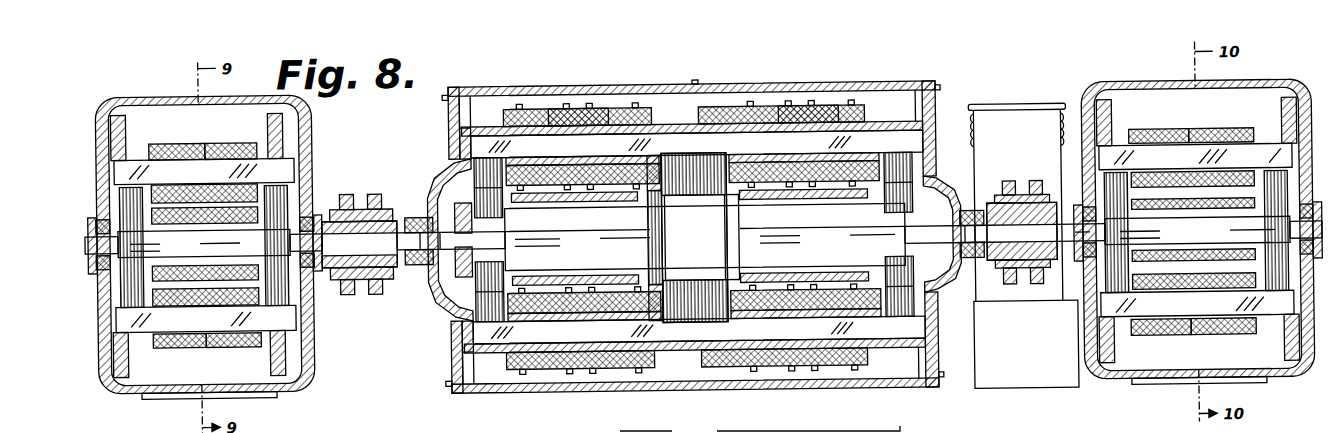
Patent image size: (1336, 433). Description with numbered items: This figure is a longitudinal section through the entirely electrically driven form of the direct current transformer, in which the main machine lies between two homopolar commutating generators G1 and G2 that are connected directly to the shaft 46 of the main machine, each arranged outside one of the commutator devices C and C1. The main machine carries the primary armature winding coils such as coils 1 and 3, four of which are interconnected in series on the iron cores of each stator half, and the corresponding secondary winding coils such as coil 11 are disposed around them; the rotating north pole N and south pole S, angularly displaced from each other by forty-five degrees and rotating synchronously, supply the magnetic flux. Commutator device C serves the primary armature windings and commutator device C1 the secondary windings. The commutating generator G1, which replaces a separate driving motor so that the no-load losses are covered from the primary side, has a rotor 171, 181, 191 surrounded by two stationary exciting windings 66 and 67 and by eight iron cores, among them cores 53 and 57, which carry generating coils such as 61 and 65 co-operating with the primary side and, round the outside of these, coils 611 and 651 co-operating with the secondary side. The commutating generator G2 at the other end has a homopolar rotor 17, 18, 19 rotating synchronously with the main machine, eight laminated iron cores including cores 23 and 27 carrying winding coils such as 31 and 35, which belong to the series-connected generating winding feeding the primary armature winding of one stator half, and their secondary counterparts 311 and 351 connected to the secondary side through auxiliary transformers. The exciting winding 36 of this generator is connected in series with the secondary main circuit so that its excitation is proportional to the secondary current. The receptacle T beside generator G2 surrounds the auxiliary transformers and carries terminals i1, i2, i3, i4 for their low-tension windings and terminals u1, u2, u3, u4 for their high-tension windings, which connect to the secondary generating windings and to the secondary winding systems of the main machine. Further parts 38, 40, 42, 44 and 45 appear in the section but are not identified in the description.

The primary armature winding coil 1 is at (870, 72).
The secondary armature winding coil 11 is at (825, 58).
The primary armature winding coil 3 is at (872, 390).
The commutating generator rotor 17 is at (1189, 227).
The commutating generator rotor 171 is at (187, 243).
The commutating generator rotor 18 is at (1125, 270).
The commutating generator rotor 181 is at (135, 295).
The commutating generator rotor 19 is at (1264, 270).
The commutating generator rotor 191 is at (285, 288).
The iron core 23 is at (1265, 320).
The iron core 27 is at (1265, 152).
The winding coil 31 is at (1135, 341).
The secondary generating winding coil 311 is at (1178, 341).
The winding coil 35 is at (1145, 135).
The secondary generating winding coil 351 is at (1195, 135).
The exciting winding 36 is at (1188, 204).
The housing wall 38 is at (450, 150).
The rotor cup 40 is at (492, 140).
The rotor hub 42 is at (700, 330).
The stator frame 44 is at (890, 124).
The housing 45 is at (700, 60).
The shaft 46 is at (946, 212).
The iron core 53 is at (285, 320).
The iron core 57 is at (292, 160).
The generating winding coil 61 is at (258, 342).
The secondary generating winding coil 611 is at (215, 342).
The generating winding coil 65 is at (160, 136).
The secondary generating winding coil 651 is at (226, 136).
The stationary exciting winding 66 is at (260, 182).
The stationary exciting winding 67 is at (260, 207).
The commutator device C is at (343, 253).
The commutator device C1 is at (1021, 237).
The south pole S is at (470, 292).
The north pole N is at (940, 300).
The receptacle T is at (1020, 108).
The commutating generator G1 is at (102, 386).
The commutating generator G2 is at (1308, 384).
The high-tension winding terminal u1 is at (976, 121).
The high-tension winding terminal u2 is at (976, 130).
The high-tension winding terminal u3 is at (976, 139).
The high-tension winding terminal u4 is at (976, 148).
The low-tension winding terminal i1 is at (1061, 121).
The low-tension winding terminal i2 is at (1061, 130).
The low-tension winding terminal i3 is at (1061, 139).
The low-tension winding terminal i4 is at (1061, 148).